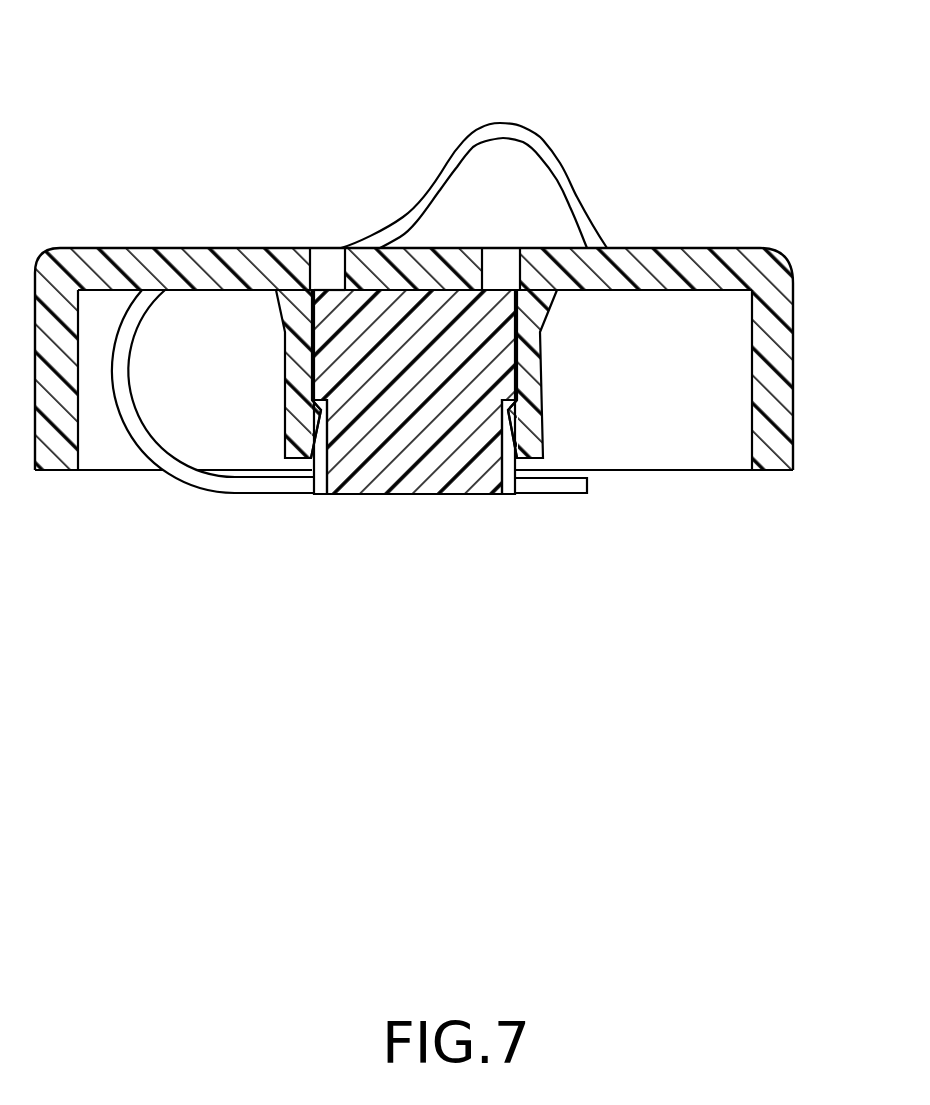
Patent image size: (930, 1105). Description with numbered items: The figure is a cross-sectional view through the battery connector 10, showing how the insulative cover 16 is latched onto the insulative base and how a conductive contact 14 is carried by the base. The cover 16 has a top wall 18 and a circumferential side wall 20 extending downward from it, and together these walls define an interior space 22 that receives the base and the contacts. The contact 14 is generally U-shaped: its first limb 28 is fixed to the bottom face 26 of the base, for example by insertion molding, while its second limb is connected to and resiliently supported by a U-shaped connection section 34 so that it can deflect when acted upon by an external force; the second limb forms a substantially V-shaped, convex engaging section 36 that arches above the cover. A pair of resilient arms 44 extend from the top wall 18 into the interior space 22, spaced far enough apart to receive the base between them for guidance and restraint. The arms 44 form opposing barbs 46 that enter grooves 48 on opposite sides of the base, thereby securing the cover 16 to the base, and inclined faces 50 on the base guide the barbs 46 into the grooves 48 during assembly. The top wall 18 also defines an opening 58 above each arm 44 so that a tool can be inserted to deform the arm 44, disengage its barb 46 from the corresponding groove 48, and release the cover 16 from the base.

The battery connector 10 is at (172, 78).
The conductive contact 14 is at (497, 141).
The insulative cover 16 is at (739, 240).
The top wall 18 is at (653, 273).
The side wall 20 is at (778, 382).
The interior space 22 is at (703, 437).
The bottom face 26 is at (413, 496).
The first limb 28 is at (265, 485).
The U-shaped connection section 34 is at (132, 397).
The engaging section 36 is at (560, 173).
The resilient arm 44 is at (293, 370).
The barb 46 is at (316, 420).
The groove 48 is at (318, 484).
The inclined face 50 is at (320, 345).
The opening 58 is at (328, 267).